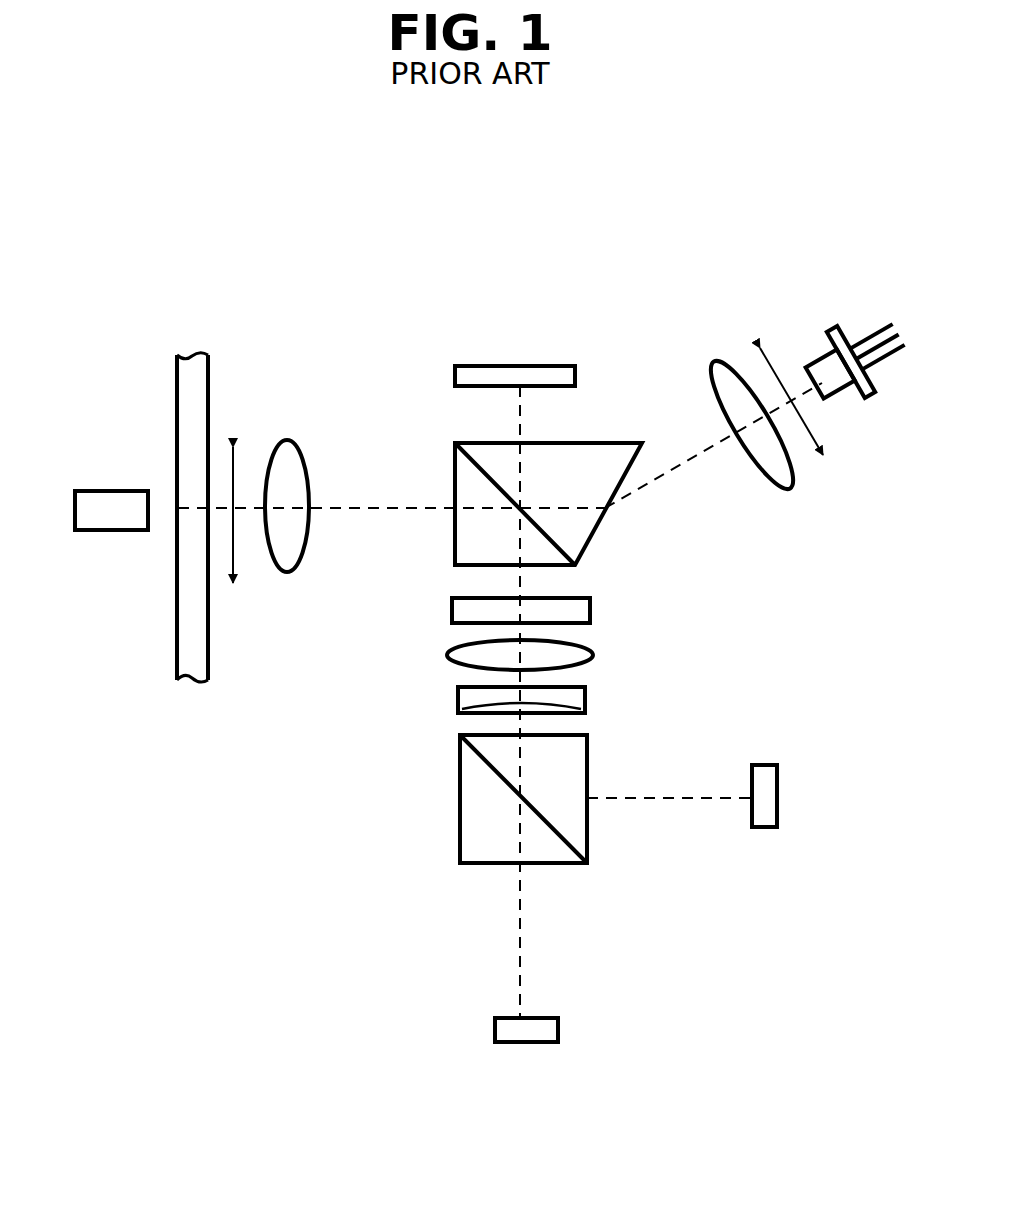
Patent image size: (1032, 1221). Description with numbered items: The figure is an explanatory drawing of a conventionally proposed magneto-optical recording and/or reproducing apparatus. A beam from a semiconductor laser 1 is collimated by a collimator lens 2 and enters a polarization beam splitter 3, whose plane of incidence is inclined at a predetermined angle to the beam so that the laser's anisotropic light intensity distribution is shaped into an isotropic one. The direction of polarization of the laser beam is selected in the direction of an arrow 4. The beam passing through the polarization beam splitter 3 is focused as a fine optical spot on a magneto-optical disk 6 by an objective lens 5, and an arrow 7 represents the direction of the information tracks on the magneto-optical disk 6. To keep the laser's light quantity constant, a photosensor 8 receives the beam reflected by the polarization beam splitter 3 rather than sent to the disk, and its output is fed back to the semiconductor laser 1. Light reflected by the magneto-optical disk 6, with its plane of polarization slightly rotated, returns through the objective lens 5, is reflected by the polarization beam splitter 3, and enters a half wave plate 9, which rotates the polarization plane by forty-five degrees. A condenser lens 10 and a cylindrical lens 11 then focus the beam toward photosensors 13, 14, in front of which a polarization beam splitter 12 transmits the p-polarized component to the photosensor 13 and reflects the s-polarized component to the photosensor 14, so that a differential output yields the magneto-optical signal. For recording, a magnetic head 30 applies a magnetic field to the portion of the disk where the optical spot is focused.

The semiconductor laser 1 is at (877, 380).
The collimator lens 2 is at (790, 478).
The polarization beam splitter 3 is at (600, 443).
The arrow 4 is at (773, 363).
The objective lens 5 is at (300, 447).
The magneto-optical disk 6 is at (208, 370).
The arrow 7 is at (237, 560).
The photosensor 8 is at (555, 366).
The half wave plate 9 is at (590, 602).
The condenser lens 10 is at (593, 650).
The cylindrical lens 11 is at (585, 700).
The polarization beam splitter 12 is at (460, 785).
The photosensor 13 is at (548, 1018).
The photosensor 14 is at (765, 827).
The magnetic head 30 is at (92, 491).